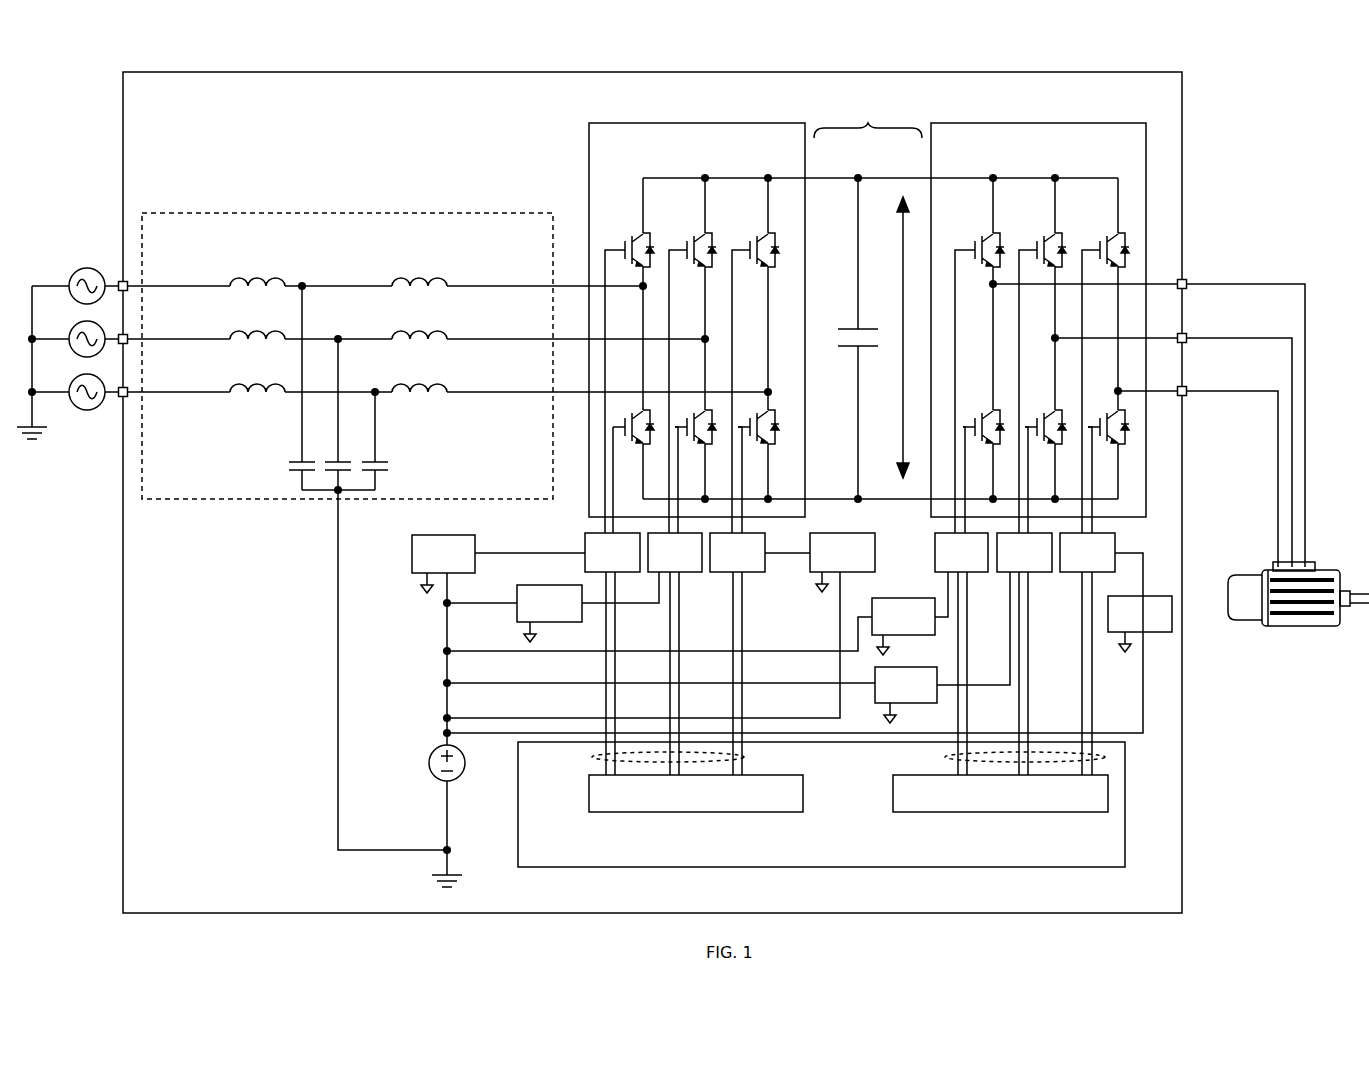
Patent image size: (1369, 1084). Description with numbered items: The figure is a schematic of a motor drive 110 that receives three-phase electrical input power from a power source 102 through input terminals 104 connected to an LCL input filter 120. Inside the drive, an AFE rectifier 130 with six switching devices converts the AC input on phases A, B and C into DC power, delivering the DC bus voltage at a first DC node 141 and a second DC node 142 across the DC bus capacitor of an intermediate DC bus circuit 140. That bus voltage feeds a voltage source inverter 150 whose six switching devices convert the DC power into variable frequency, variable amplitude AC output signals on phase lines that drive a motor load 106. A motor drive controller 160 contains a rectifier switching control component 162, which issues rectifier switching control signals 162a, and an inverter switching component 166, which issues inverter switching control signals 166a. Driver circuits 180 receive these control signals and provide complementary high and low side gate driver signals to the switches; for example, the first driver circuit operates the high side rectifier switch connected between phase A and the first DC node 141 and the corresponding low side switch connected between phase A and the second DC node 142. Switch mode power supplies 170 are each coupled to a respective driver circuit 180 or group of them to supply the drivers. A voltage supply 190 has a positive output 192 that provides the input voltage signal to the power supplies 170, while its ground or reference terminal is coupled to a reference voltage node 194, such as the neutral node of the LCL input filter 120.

The power source 102 is at (78, 264).
The input terminals 104 is at (110, 402).
The motor load 106 is at (1238, 627).
The motor drive 110 is at (192, 72).
The LCL input filter 120 is at (344, 213).
The AFE rectifier 130 is at (702, 122).
The intermediate DC bus circuit 140 is at (868, 123).
The first DC node 141 is at (832, 178).
The second DC node 142 is at (821, 499).
The voltage source inverter 150 is at (1042, 122).
The motor drive controller 160 is at (822, 867).
The rectifier switching control component 162 is at (589, 793).
The rectifier switching control signals 162a is at (746, 757).
The inverter switching component 166 is at (893, 793).
The inverter switching control signals 166a is at (950, 757).
The switch mode power supplies 170 is at (435, 535).
The driver circuits 180 is at (595, 535).
The voltage supply 190 is at (429, 763).
The positive output 192 is at (442, 742).
The reference voltage node 194 is at (444, 814).